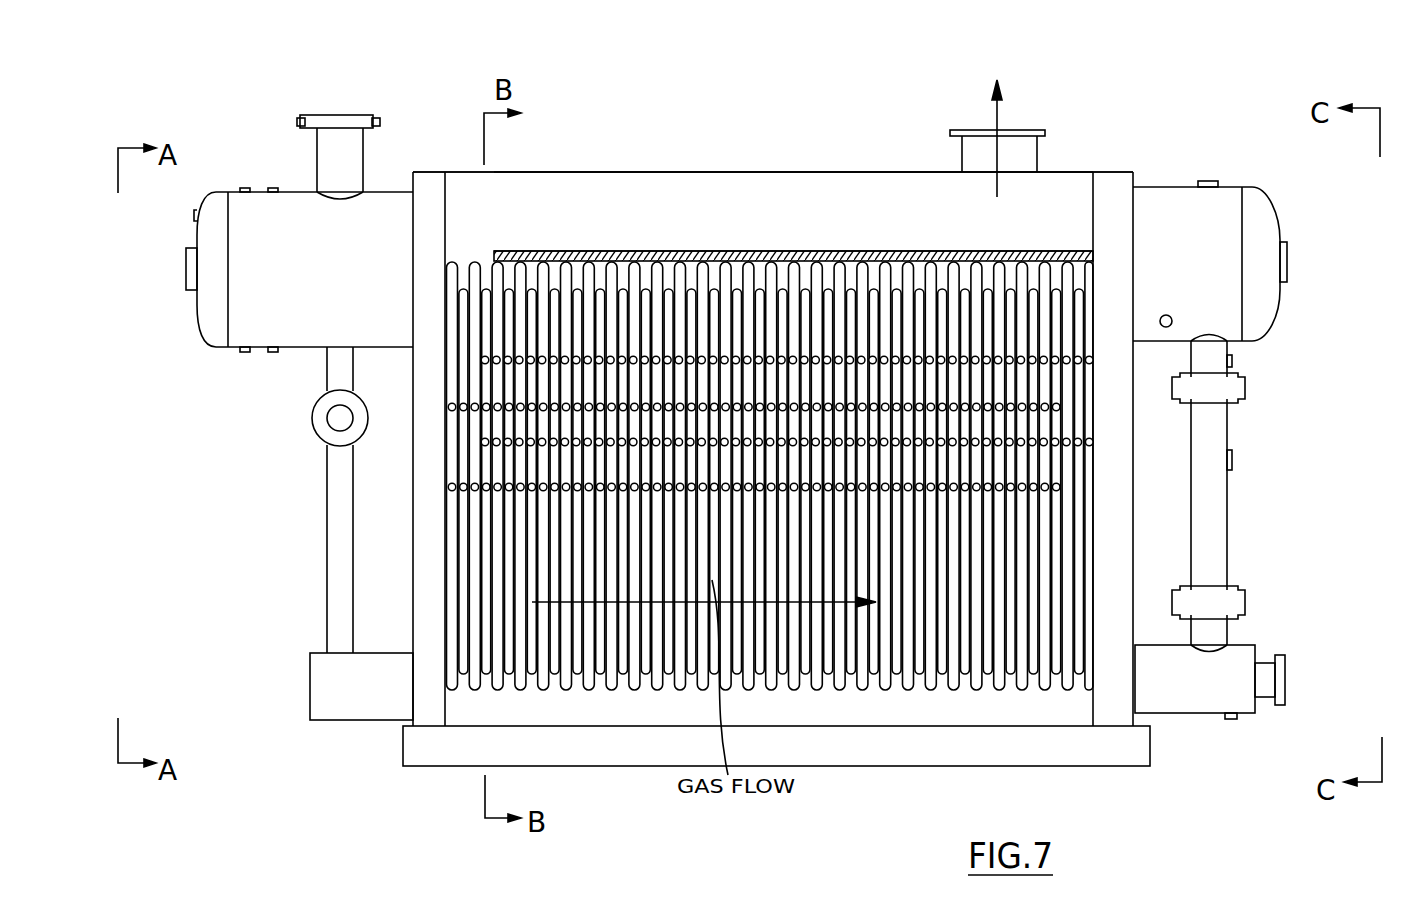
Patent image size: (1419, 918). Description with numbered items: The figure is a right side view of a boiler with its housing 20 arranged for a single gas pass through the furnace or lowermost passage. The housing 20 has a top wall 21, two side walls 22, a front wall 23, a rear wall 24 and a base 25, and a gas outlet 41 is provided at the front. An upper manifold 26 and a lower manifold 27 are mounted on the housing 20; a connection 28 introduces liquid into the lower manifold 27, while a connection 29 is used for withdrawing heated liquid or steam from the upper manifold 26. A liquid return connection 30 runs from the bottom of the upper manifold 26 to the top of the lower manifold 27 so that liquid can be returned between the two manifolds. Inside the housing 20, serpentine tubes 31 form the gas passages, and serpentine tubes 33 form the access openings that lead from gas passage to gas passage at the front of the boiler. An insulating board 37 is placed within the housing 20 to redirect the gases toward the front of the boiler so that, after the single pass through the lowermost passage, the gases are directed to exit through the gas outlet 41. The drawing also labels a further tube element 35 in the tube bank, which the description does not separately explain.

The housing 20 is at (1133, 171).
The top wall 21 is at (815, 171).
The side walls 22 is at (892, 205).
The front wall 23 is at (412, 498).
The rear wall 24 is at (1135, 501).
The base 25 is at (884, 766).
The upper manifold 26 is at (1232, 187).
The lower manifold 27 is at (1207, 714).
The connection for introducing liquid 28 is at (1286, 670).
The connection for withdrawing heated liquid or steam 29 is at (334, 115).
The liquid return connection 30 is at (327, 530).
The serpentine tubes 31 is at (683, 251).
The serpentine tubes 33 is at (474, 262).
The rear row tubes 35 is at (1085, 251).
The insulating board 37 is at (848, 251).
The gas outlet 41 is at (1020, 130).